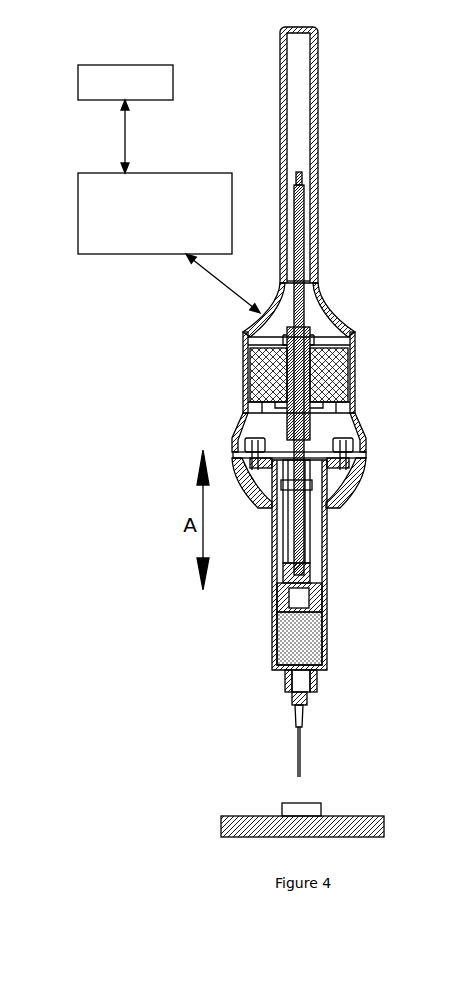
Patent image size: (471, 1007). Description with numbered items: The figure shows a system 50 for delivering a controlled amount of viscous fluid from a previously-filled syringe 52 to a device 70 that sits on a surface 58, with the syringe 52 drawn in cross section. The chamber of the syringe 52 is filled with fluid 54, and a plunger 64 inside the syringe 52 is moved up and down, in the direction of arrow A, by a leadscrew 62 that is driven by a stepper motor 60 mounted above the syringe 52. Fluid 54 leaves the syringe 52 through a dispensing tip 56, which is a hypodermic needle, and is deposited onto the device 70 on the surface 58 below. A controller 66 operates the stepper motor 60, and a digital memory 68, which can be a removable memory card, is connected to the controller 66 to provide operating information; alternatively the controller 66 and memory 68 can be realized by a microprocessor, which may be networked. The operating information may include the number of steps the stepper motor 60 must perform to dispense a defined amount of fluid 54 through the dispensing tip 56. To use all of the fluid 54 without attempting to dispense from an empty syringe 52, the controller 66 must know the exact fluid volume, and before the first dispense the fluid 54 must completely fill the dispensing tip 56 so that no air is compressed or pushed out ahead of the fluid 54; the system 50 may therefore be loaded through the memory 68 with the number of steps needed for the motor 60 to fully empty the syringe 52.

The system 50 is at (150, 401).
The syringe 52 is at (325, 533).
The fluid 54 is at (325, 627).
The dispensing tip 56 is at (302, 737).
The surface 58 is at (368, 816).
The stepper motor 60 is at (355, 310).
The leadscrew 62 is at (302, 225).
The plunger 64 is at (325, 580).
The controller 66 is at (133, 254).
The digital memory 68 is at (102, 100).
The device 70 is at (321, 803).